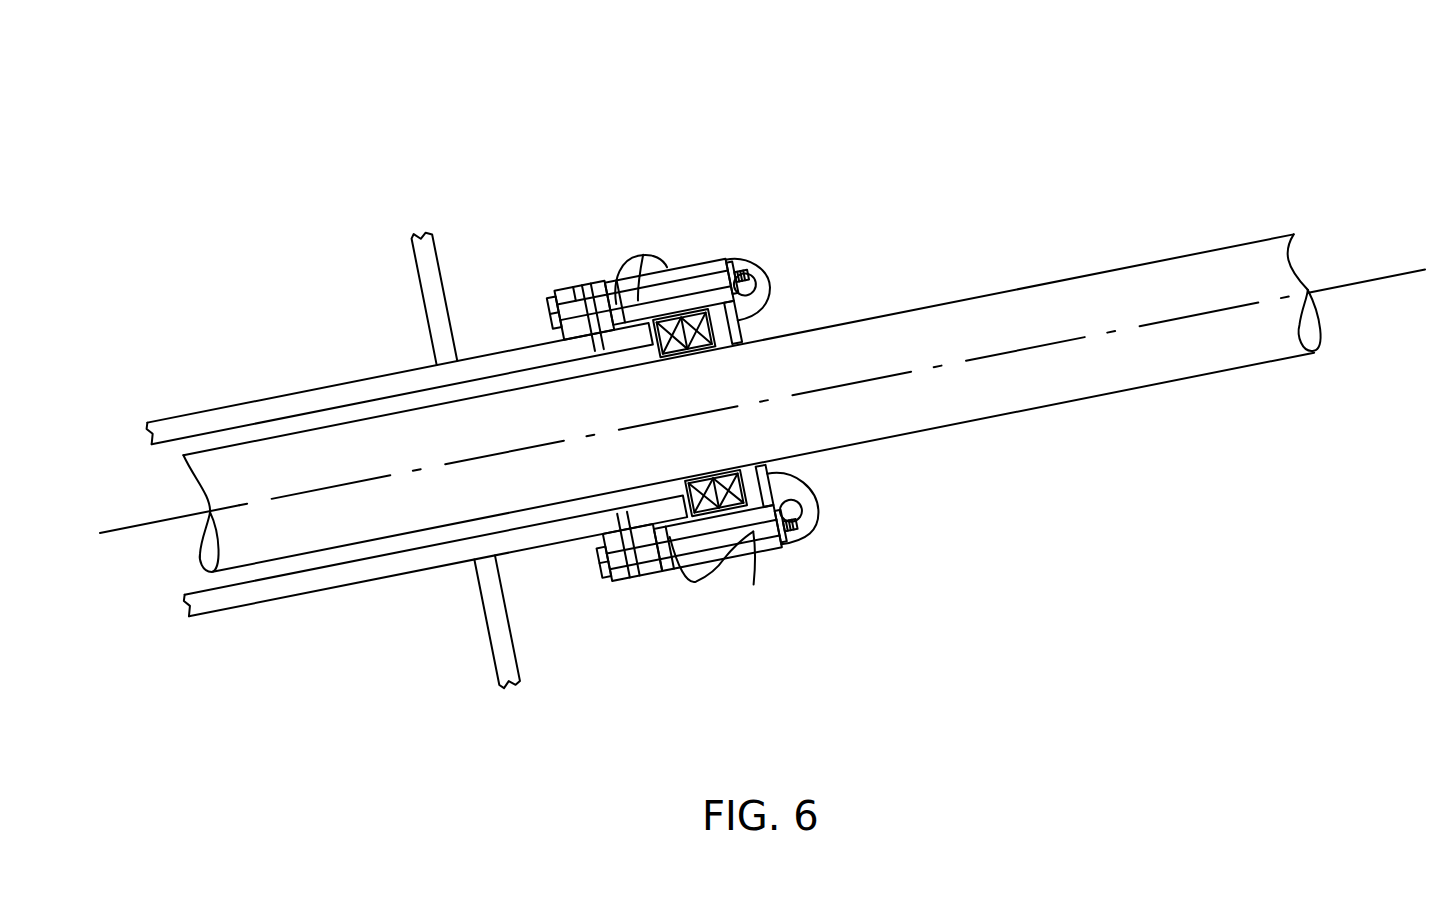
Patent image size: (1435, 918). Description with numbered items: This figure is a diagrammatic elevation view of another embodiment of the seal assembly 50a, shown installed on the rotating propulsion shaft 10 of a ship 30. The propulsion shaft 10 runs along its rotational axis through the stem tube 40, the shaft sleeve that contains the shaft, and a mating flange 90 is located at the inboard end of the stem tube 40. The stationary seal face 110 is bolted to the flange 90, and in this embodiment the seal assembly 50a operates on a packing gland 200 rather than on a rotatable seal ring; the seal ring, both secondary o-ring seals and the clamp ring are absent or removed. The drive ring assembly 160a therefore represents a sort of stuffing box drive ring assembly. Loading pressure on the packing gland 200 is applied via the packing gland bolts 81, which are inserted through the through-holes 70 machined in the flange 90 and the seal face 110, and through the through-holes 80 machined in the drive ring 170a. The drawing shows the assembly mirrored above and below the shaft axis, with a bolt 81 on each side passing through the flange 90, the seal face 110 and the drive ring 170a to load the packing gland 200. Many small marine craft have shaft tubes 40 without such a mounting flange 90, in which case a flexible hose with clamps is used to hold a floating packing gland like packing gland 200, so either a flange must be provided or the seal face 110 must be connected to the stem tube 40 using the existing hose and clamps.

The propulsion shaft 10 is at (1160, 285).
The ship 30 is at (412, 257).
The stem tube 40 is at (232, 405).
The seal assembly 50a is at (678, 205).
The through-holes 70 is at (600, 283).
The packing gland bolts 81 is at (637, 298).
The mating flange 90 is at (558, 288).
The drive ring 170a is at (710, 267).
The drive ring assembly 160a is at (773, 293).
The packing gland 200 is at (770, 551).
The through-holes 80 is at (755, 538).
The stationary seal face 110 is at (655, 578).